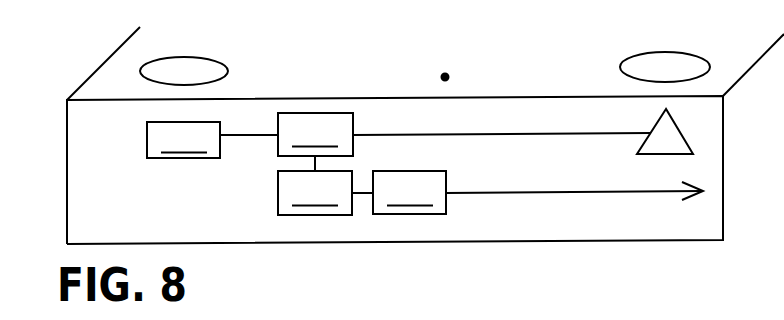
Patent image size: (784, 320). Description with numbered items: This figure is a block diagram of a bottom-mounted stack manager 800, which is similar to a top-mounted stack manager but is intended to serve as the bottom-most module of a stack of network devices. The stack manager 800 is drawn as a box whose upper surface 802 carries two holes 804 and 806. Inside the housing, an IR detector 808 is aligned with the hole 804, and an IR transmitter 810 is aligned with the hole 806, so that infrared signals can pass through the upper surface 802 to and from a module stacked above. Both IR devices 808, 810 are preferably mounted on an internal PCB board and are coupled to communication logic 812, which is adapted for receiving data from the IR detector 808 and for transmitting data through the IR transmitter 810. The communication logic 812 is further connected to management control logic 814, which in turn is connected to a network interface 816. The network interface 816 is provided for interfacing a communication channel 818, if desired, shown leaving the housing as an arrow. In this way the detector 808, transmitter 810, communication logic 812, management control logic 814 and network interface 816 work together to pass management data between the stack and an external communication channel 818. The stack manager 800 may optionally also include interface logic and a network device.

The bottom-mounted stack manager 800 is at (93, 73).
The upper surface 802 is at (444, 75).
The hole 804 is at (204, 57).
The hole 806 is at (620, 67).
The IR detector 808 is at (212, 140).
The IR transmitter 810 is at (656, 122).
The communication logic 812 is at (464, 142).
The management control logic 814 is at (325, 193).
The network interface 816 is at (409, 192).
The communication channel 818 is at (555, 190).